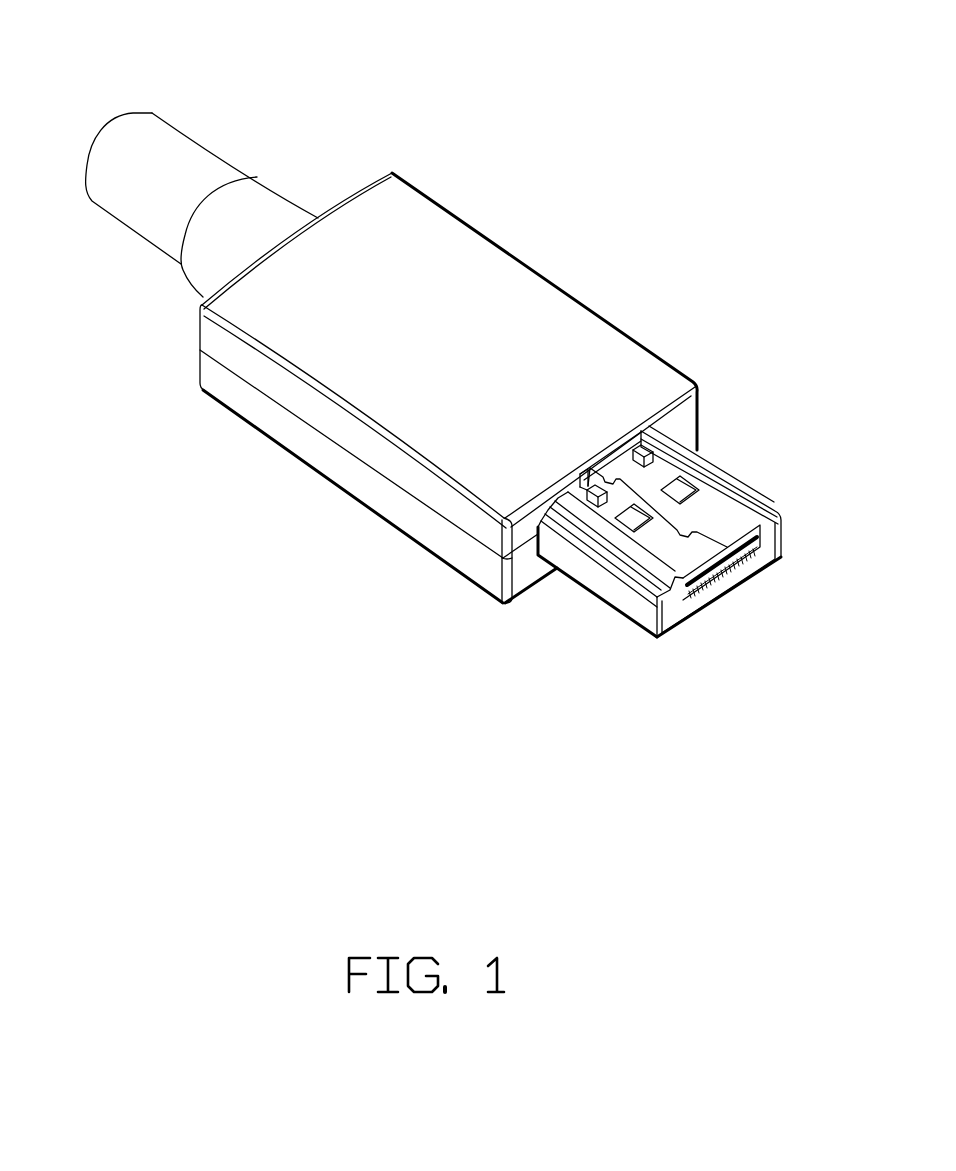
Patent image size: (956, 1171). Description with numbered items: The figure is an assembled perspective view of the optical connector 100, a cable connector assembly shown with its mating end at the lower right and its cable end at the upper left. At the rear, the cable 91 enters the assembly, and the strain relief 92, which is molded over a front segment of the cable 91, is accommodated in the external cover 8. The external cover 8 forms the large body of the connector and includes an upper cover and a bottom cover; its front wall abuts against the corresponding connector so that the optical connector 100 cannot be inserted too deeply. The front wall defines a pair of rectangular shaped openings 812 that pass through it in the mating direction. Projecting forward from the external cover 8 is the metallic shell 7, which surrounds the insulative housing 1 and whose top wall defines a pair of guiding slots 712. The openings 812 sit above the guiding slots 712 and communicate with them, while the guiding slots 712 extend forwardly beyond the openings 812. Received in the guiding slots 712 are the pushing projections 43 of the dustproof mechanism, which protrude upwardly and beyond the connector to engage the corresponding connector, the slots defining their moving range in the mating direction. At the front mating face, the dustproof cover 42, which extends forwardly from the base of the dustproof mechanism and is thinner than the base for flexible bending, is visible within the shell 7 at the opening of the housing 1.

The optical connector 100 is at (578, 238).
The cable 91 is at (182, 172).
The strain relief 92 is at (258, 213).
The external cover 8 is at (470, 273).
The rectangular shaped opening 812 is at (584, 475).
The guiding slot 712 is at (590, 482).
The pushing projection 43 is at (653, 455).
The insulative housing 1 is at (767, 535).
The metallic shell 7 is at (588, 580).
The dustproof cover 42 is at (717, 580).